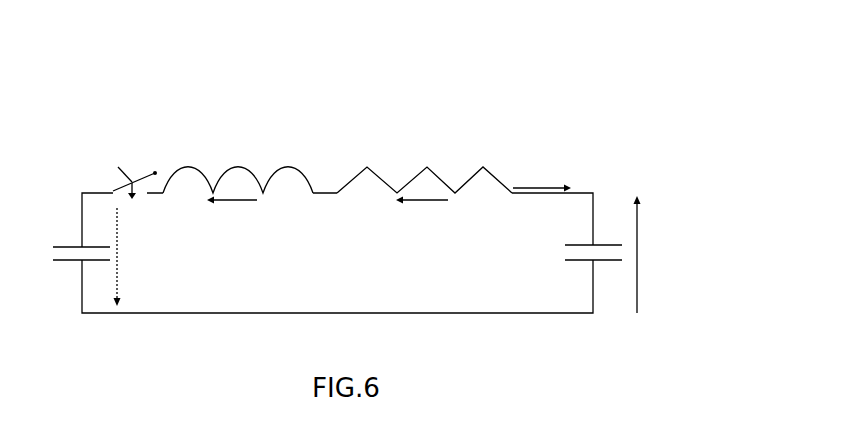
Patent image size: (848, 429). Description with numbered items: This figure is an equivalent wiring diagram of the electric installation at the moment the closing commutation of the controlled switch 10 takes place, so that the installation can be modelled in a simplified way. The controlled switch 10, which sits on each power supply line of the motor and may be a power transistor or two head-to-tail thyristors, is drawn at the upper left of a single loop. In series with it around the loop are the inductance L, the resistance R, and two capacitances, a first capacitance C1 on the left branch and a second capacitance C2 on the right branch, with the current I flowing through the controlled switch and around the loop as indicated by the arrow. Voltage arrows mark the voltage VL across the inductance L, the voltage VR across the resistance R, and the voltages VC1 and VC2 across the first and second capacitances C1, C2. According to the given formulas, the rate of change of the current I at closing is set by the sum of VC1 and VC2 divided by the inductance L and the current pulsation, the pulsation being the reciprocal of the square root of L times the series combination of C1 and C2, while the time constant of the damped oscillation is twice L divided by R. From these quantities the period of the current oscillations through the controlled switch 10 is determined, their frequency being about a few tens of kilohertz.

The controlled switch 10 is at (140, 176).
The inductance L is at (238, 163).
The resistance R is at (424, 163).
The first capacitance C1 is at (64, 247).
The second capacitance C2 is at (577, 240).
The current I is at (542, 171).
The inductance voltage VL is at (232, 211).
The resistance voltage VR is at (422, 211).
The first capacitance voltage VC1 is at (137, 257).
The second capacitance voltage VC2 is at (664, 254).